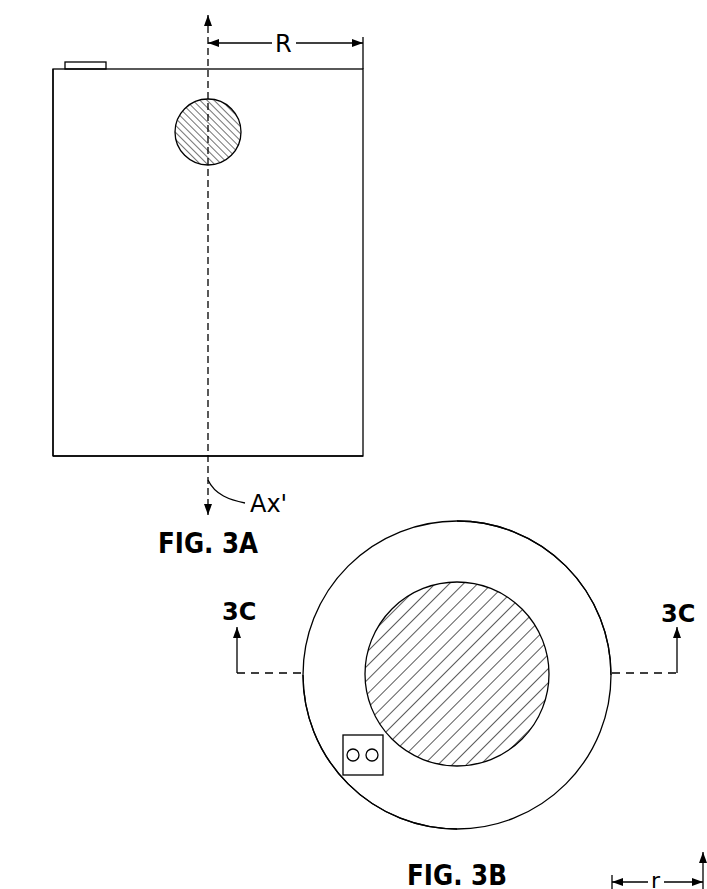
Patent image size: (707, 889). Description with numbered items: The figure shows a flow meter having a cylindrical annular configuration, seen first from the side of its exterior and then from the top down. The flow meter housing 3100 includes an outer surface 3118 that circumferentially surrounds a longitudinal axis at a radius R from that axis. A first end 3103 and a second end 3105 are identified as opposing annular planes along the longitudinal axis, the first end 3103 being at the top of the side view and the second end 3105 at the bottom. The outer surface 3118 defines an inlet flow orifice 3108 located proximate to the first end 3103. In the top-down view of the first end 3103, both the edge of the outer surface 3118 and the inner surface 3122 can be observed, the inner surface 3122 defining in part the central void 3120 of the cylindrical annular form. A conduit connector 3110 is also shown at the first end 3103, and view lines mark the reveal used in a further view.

In FIG. 3A, the flow meter housing 3100 is at (345, 132).
In FIG. 3A, the first end 3103 is at (62, 68).
In FIG. 3B, the first end 3103 is at (455, 548).
In FIG. 3A, the second end 3105 is at (90, 457).
In FIG. 3A, the inlet flow orifice 3108 is at (253, 133).
In FIG. 3B, the conduit connector 3110 is at (343, 752).
In FIG. 3A, the outer surface 3118 is at (317, 296).
In FIG. 3B, the outer surface 3118 is at (525, 536).
In FIG. 3B, the central void 3120 is at (568, 733).
In FIG. 3B, the inner surface 3122 is at (520, 604).